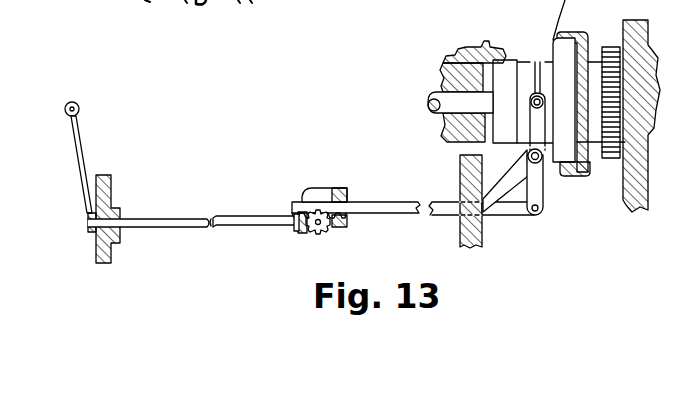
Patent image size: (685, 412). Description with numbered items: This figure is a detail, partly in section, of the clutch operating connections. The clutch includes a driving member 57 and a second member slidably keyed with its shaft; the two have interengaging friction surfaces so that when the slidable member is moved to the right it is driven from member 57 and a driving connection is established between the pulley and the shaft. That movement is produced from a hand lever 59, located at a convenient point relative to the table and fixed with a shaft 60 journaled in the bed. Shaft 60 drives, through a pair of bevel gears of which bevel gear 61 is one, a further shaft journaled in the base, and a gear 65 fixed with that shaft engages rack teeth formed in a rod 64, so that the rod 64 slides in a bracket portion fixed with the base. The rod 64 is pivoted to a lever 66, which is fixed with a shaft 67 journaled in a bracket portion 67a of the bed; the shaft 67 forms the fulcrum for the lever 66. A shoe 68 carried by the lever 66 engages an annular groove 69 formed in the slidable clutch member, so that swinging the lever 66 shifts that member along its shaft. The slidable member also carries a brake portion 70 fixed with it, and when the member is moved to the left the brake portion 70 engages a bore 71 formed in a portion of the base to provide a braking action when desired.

The clutch member 57 is at (579, 34).
The hand lever 59 is at (80, 110).
The shaft 60 is at (181, 219).
The bevel gear 61 is at (299, 230).
The rod 64 is at (348, 197).
The gear 65 is at (334, 227).
The lever 66 is at (539, 186).
The shaft 67 is at (528, 158).
The bracket portion 67a is at (483, 176).
The shoe 68 is at (519, 0).
The annular groove 69 is at (538, 62).
The brake portion 70 is at (503, 70).
The bore 71 is at (449, 58).